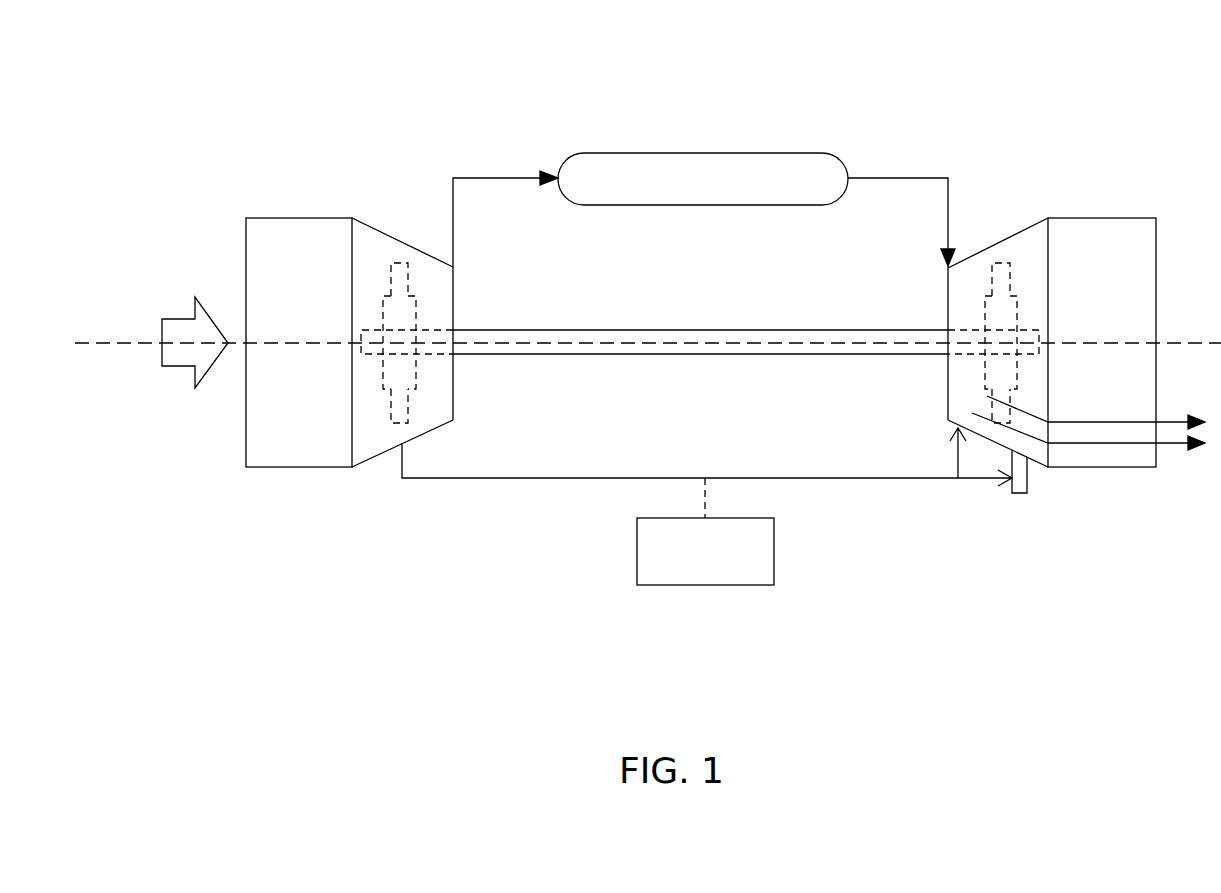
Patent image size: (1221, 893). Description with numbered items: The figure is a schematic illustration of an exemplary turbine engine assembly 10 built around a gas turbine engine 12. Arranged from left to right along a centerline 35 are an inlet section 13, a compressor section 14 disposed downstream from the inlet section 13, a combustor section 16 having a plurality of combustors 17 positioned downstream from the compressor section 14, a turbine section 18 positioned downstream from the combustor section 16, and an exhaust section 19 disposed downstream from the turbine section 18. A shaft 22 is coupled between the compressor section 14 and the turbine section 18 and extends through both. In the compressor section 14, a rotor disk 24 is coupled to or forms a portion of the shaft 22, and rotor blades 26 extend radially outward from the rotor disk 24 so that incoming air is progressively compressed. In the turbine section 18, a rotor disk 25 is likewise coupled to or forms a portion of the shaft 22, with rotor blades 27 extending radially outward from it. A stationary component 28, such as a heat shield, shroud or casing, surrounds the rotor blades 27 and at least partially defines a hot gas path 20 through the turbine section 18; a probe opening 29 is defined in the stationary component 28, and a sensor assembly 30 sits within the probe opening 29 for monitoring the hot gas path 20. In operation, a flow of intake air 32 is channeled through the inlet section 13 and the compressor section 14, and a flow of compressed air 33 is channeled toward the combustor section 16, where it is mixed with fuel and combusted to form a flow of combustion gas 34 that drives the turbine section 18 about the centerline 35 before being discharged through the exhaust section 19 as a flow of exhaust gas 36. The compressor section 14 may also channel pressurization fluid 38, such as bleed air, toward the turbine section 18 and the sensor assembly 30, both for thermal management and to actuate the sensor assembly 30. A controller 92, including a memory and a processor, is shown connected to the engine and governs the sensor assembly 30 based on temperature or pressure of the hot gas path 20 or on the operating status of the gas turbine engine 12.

The turbine engine assembly 10 is at (370, 103).
The gas turbine engine 12 is at (539, 152).
The inlet section 13 is at (286, 218).
The compressor section 14 is at (374, 228).
The combustor section 16 is at (703, 149).
The combustors 17 is at (762, 153).
The turbine section 18 is at (1037, 223).
The exhaust section 19 is at (1120, 218).
The hot gas path 20 is at (980, 262).
The shaft 22 is at (641, 355).
The rotor disk 24 is at (383, 315).
The rotor disk 25 is at (985, 317).
The rotor blades 26 is at (391, 272).
The rotor blades 27 is at (1003, 263).
The stationary component 28 is at (949, 421).
The probe opening 29 is at (1028, 460).
The sensor assembly 30 is at (1020, 495).
The intake air 32 is at (178, 317).
The compressed air 33 is at (482, 179).
The combustion gas 34 is at (886, 179).
The centerline 35 is at (782, 343).
The exhaust gas 36 is at (1093, 422).
The pressurization fluid 38 is at (556, 478).
The controller 92 is at (691, 565).